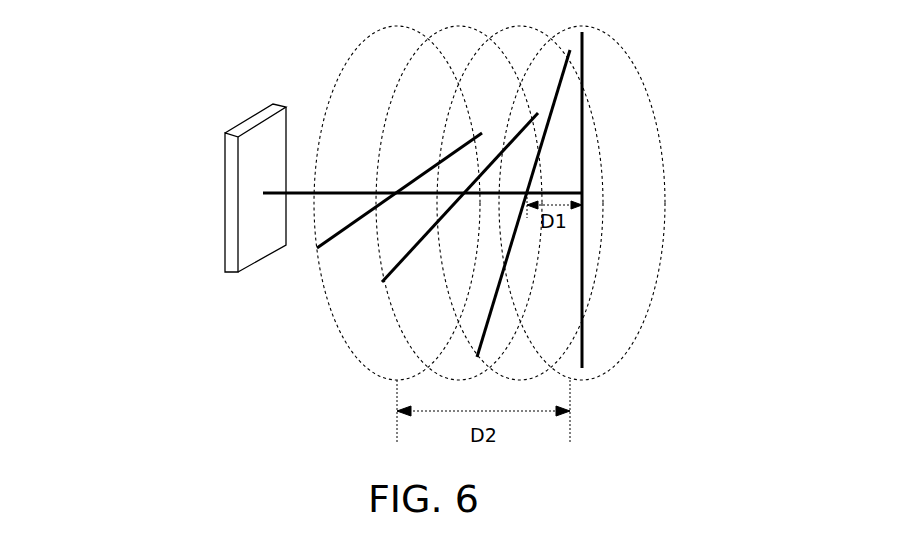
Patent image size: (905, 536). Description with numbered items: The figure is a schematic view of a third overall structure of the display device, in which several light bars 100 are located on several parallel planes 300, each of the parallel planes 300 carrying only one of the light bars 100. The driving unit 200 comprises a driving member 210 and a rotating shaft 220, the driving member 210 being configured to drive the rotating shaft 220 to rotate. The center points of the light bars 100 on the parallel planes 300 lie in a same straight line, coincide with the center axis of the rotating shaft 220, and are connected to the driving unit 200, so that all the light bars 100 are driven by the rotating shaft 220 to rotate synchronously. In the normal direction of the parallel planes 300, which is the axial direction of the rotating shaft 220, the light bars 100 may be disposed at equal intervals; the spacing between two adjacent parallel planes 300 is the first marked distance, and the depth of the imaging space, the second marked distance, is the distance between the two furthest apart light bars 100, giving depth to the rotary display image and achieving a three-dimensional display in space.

The light bar 100 is at (583, 163).
The driving unit 200 is at (331, 191).
The driving member 210 is at (255, 228).
The rotating shaft 220 is at (270, 193).
The parallel planes 300 is at (348, 65).